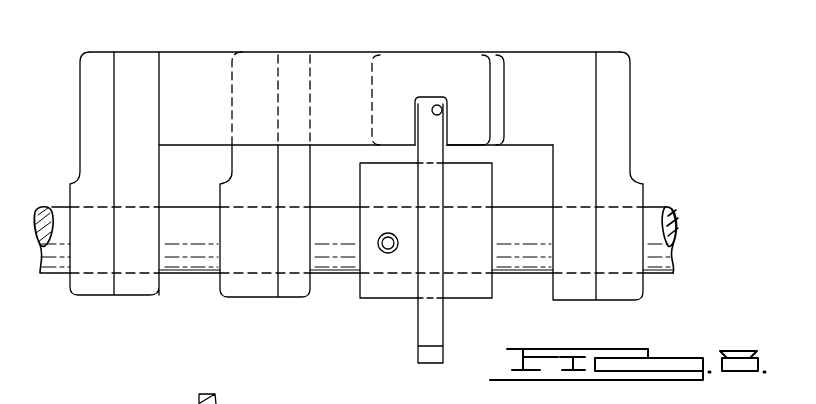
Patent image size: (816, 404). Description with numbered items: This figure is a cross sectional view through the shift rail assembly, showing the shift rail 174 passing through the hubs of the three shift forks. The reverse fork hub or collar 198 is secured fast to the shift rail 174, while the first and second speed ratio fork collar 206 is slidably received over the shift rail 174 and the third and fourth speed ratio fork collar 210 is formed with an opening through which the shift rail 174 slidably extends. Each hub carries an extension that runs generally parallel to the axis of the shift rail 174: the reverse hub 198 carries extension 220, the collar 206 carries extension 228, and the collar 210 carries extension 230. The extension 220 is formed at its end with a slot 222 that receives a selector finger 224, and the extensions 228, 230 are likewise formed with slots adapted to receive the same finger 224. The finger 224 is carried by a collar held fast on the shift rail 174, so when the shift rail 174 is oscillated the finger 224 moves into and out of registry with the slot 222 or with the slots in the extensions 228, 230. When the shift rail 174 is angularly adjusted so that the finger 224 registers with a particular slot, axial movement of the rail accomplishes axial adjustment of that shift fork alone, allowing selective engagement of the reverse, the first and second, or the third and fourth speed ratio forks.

The shift rail 174 is at (660, 232).
The hub or collar 198 is at (88, 300).
The collar 206 is at (260, 300).
The collar 210 is at (617, 302).
The extension 220 is at (199, 63).
The slot 222 is at (438, 106).
The selector finger 224 is at (427, 120).
The extension 228 is at (500, 78).
The extension 230 is at (540, 74).